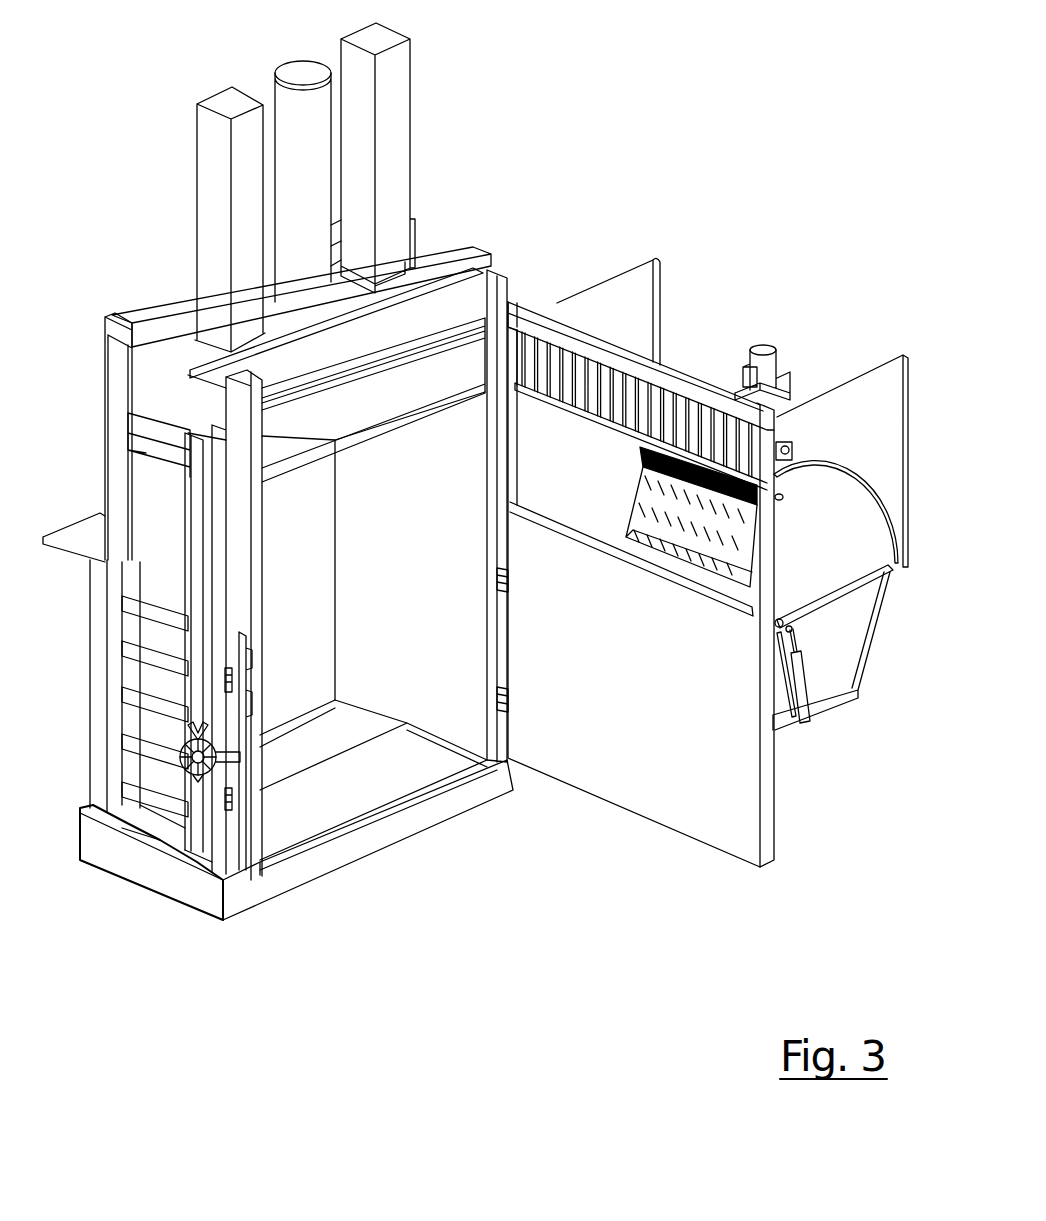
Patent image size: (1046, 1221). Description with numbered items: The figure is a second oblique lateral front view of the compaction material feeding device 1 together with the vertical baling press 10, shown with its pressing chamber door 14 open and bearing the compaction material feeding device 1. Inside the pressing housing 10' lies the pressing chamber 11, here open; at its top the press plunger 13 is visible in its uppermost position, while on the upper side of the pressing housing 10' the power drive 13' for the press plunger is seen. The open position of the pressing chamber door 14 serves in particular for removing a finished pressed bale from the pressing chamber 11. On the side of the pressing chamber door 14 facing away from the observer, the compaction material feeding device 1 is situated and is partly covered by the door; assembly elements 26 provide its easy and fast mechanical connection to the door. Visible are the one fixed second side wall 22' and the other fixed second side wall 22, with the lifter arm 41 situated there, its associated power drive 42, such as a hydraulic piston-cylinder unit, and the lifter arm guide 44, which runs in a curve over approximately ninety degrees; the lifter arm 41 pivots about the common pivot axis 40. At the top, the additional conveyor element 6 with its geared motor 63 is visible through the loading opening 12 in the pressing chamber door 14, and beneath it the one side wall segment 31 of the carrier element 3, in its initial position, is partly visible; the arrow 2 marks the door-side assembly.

The compaction material feeding device 1 is at (903, 643).
The bale discharge door assembly 2 is at (718, 345).
The carrier element 3 is at (628, 512).
The additional conveyor element 6 is at (575, 417).
The vertical baling press 10 is at (296, 636).
The pressing housing 10' is at (267, 543).
The pressing chamber 11 is at (305, 690).
The loading opening 12 is at (578, 462).
The press plunger 13 is at (336, 401).
The power drive for the press plunger 13' is at (342, 187).
The pressing chamber door 14 is at (664, 725).
The second fixed side wall 22 is at (865, 461).
The second fixed side wall 22' is at (642, 271).
The assembly elements 26 is at (787, 454).
The side wall segment 31 is at (712, 512).
The pivot axis 40 is at (788, 640).
The lifter arm 41 is at (852, 587).
The power drive 42 is at (803, 697).
The lifter arm guide 44 is at (803, 497).
The geared motor 63 is at (780, 387).